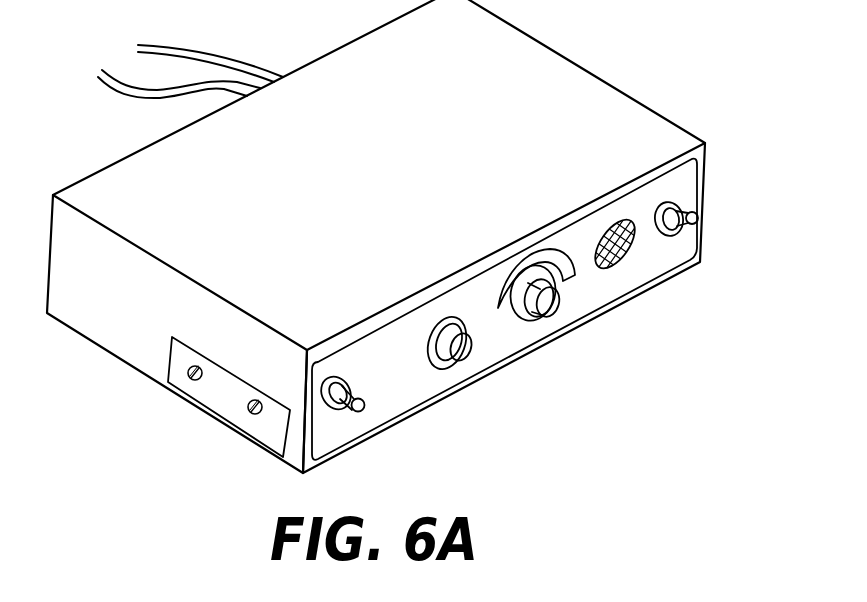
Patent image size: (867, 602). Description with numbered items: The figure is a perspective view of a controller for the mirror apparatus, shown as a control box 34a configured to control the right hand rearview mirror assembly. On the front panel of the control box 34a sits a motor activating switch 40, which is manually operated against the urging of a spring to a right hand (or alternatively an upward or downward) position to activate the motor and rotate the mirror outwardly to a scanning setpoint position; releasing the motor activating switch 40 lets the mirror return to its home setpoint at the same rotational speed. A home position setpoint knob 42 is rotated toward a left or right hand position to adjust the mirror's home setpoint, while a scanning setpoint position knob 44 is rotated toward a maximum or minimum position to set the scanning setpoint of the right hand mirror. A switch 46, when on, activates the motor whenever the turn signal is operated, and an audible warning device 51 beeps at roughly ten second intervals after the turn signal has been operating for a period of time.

The control box 34a is at (632, 89).
The motor activating switch 40 is at (360, 411).
The home position setpoint knob 42 is at (465, 352).
The scanning setpoint position knob 44 is at (552, 306).
The switch 46 is at (698, 218).
The audible warning device 51 is at (630, 253).